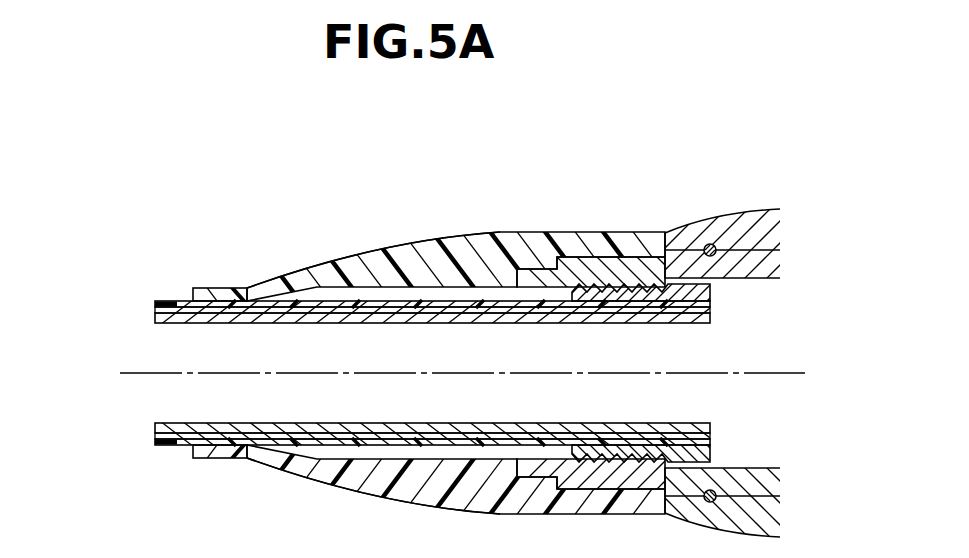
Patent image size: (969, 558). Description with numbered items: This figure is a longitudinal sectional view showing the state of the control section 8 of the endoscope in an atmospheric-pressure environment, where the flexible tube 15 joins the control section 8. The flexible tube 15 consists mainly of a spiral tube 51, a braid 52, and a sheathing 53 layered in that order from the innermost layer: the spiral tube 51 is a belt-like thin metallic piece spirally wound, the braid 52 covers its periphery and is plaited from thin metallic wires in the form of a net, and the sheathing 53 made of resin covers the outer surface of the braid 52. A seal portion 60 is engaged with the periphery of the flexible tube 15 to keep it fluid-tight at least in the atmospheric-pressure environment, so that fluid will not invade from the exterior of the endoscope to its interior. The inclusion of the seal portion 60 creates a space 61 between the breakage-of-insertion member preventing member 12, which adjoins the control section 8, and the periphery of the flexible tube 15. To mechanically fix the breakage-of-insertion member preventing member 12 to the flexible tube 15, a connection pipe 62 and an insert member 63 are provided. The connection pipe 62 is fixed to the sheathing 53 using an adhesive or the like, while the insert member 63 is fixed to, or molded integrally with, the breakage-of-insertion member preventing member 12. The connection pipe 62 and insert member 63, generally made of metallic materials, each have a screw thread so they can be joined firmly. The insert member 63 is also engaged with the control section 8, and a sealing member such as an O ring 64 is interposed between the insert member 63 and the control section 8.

The control section 8 is at (760, 226).
The breakage-of-insertion member preventing member 12 is at (466, 242).
The flexible tube 15 is at (383, 369).
The spiral tube 51 is at (398, 333).
The braid 52 is at (157, 312).
The sheathing 53 is at (158, 303).
The seal portion 60 is at (253, 261).
The space 61 is at (410, 290).
The connection pipe 62 is at (640, 282).
The insert member 63 is at (574, 262).
The O ring 64 is at (706, 245).